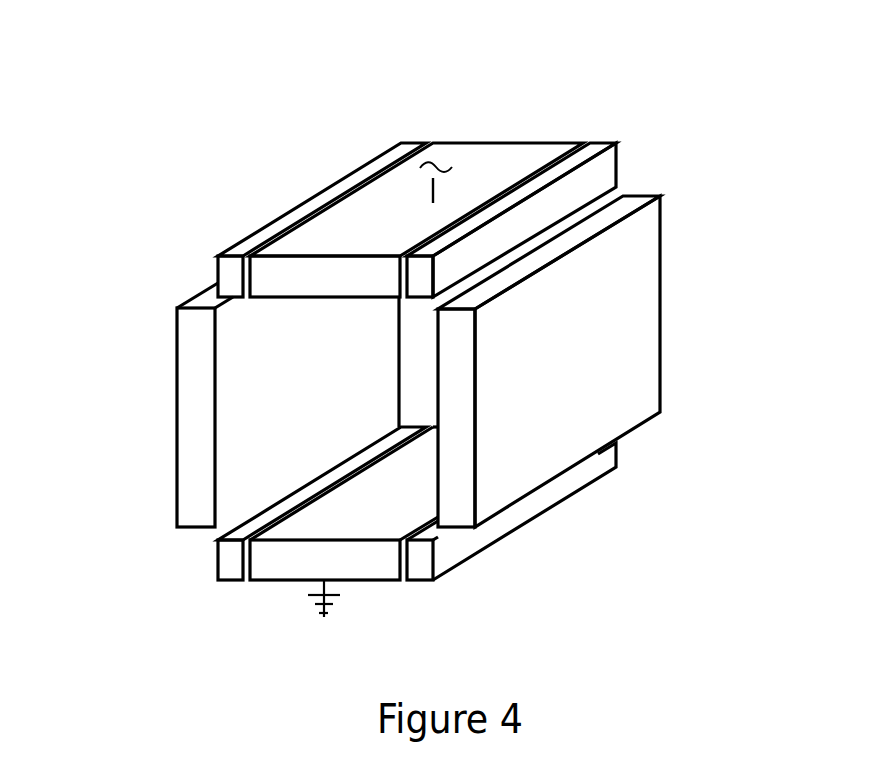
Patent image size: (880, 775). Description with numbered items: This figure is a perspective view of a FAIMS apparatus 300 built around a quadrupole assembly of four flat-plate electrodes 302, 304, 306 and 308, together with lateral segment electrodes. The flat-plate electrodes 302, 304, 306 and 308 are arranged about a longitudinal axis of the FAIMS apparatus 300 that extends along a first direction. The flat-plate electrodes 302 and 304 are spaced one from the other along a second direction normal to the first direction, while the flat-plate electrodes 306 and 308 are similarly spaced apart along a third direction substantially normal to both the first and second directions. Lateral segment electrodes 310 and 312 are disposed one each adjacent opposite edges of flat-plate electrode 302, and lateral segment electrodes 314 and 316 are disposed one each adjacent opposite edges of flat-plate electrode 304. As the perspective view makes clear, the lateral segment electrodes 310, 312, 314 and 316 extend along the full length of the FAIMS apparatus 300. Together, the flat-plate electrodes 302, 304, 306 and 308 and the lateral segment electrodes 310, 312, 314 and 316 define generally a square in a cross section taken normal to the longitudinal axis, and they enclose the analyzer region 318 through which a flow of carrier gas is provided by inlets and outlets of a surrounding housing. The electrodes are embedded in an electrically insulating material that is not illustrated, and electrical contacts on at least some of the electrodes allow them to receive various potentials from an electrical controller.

The FAIMS apparatus 300 is at (190, 152).
The flat-plate electrode 302 is at (552, 142).
The flat-plate electrode 304 is at (367, 563).
The flat-plate electrode 306 is at (623, 332).
The flat-plate electrode 308 is at (193, 480).
The lateral segment electrode 310 is at (410, 138).
The lateral segment electrode 312 is at (597, 143).
The lateral segment electrode 314 is at (232, 562).
The lateral segment electrode 316 is at (452, 548).
The analyzer region 318 is at (267, 468).